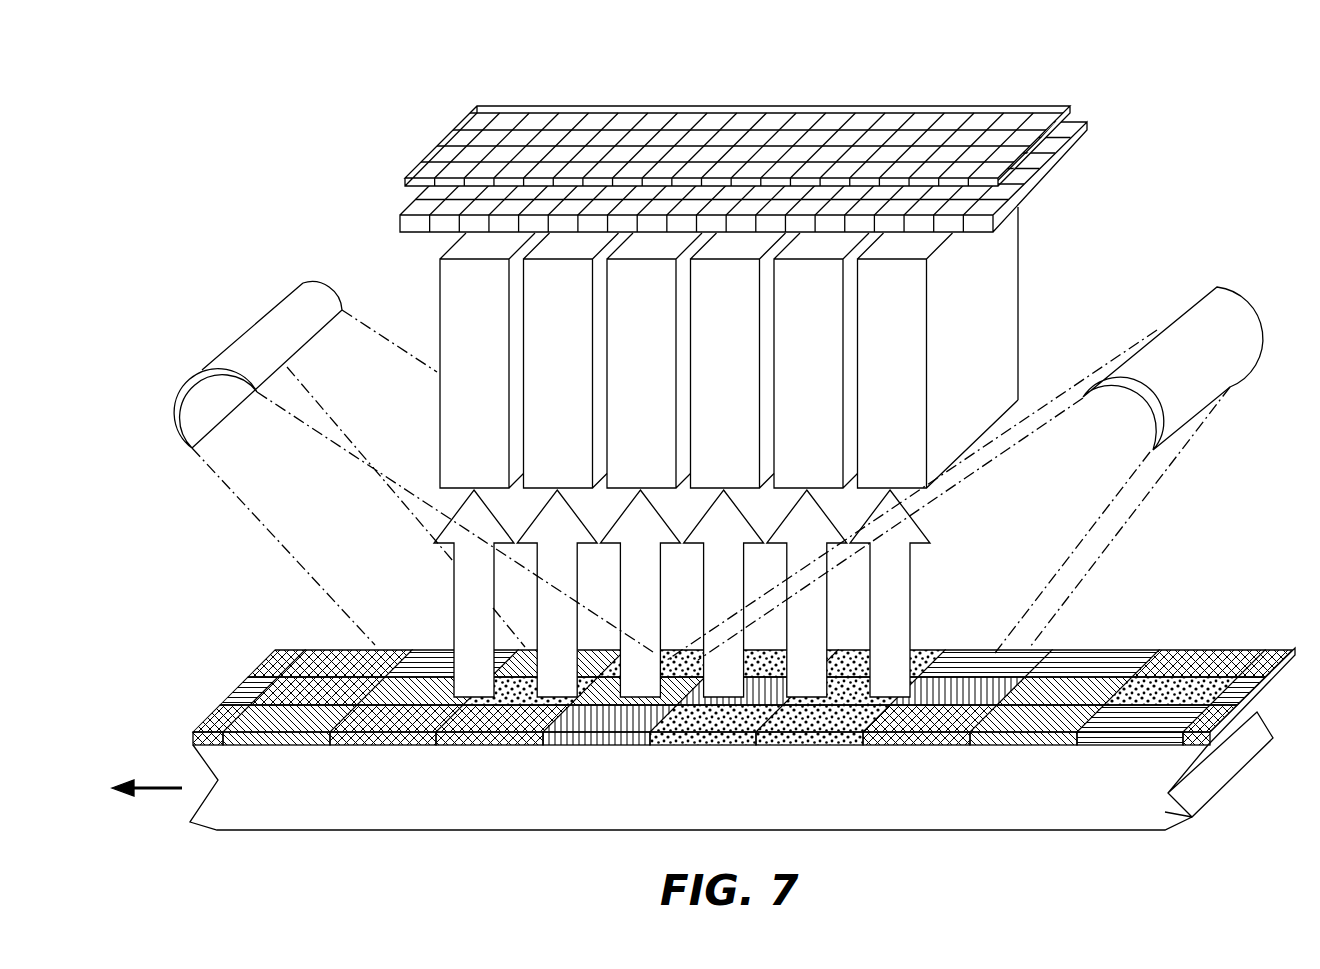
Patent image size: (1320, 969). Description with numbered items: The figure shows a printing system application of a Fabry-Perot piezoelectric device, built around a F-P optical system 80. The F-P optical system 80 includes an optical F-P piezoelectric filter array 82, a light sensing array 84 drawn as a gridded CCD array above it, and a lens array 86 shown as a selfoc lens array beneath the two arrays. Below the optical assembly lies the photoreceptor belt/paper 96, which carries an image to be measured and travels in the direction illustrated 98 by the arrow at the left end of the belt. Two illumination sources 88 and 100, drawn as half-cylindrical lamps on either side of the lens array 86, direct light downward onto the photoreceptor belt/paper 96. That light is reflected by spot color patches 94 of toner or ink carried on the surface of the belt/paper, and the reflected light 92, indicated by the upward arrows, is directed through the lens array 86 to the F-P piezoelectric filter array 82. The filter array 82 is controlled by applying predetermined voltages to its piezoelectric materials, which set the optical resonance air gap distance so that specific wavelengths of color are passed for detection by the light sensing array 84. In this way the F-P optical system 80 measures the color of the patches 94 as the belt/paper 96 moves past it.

The F-P optical system 80 is at (702, 454).
The optical F-P piezoelectric filter array 82 is at (1078, 147).
The light sensing array 84 is at (1070, 108).
The lens array 86 is at (1006, 283).
The illumination source 88 is at (1180, 307).
The reflected light paths 92 is at (460, 597).
The spot color patches 94 is at (1132, 650).
The photoreceptor belt/paper 96 is at (1197, 820).
The direction of travel 98 is at (135, 785).
The illumination source 100 is at (242, 323).